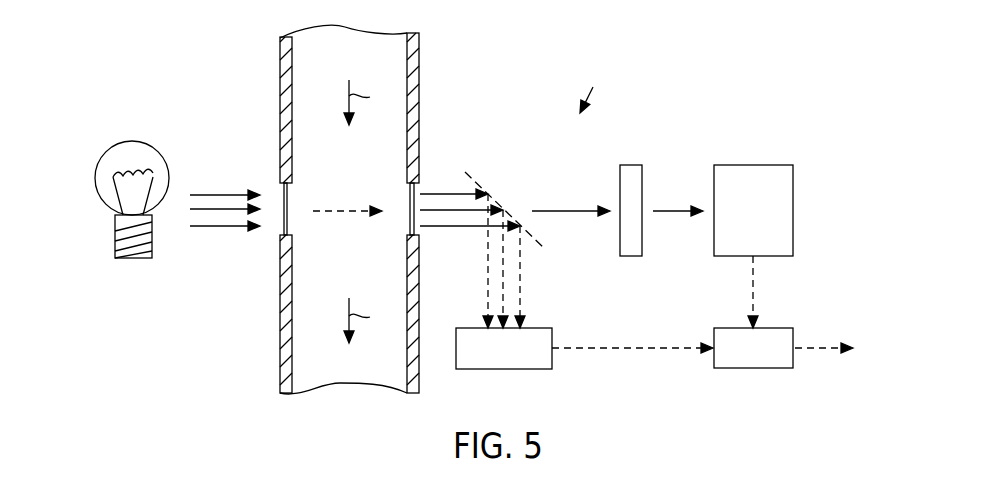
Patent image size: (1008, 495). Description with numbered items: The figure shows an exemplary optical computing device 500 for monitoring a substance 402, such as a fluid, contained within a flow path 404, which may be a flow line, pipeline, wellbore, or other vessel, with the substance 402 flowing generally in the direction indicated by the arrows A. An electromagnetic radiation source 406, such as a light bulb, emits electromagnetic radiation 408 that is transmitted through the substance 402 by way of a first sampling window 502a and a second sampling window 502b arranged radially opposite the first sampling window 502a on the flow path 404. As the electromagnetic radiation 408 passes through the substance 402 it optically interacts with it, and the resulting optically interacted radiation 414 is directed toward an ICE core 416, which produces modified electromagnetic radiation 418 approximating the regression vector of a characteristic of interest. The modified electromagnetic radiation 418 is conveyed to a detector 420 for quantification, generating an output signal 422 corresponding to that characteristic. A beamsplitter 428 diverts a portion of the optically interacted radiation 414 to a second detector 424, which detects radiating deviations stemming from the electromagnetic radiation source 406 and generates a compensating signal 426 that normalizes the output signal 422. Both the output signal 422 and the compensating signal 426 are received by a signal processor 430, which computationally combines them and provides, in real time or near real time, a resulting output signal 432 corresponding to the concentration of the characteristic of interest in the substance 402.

The substance 402 is at (367, 179).
The flow path 404 is at (419, 60).
The electromagnetic radiation source 406 is at (112, 157).
The electromagnetic radiation 408 is at (220, 193).
The optically interacted radiation 414 is at (445, 192).
The ICE core 416 is at (632, 166).
The modified electromagnetic radiation 418 is at (670, 209).
The detector 420 is at (773, 226).
The output signal 422 is at (753, 283).
The second detector 424 is at (523, 360).
The compensating signal 426 is at (582, 348).
The beamsplitter 428 is at (473, 170).
The signal processor 430 is at (772, 360).
The resulting output signal 432 is at (823, 348).
The optical computing device 500 is at (594, 86).
The first sampling window 502a is at (283, 230).
The second sampling window 502b is at (418, 233).